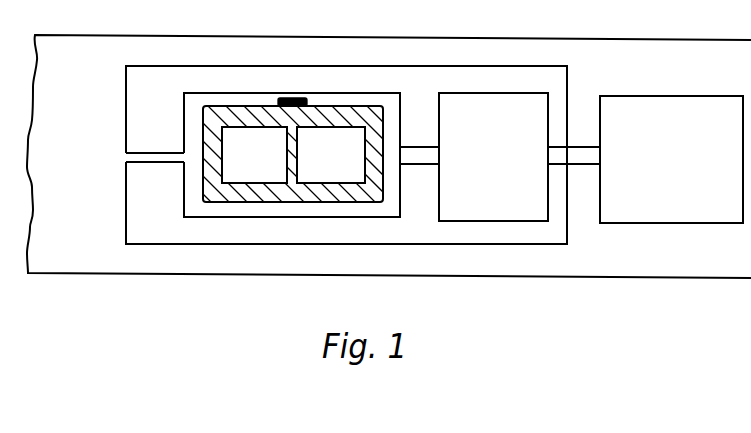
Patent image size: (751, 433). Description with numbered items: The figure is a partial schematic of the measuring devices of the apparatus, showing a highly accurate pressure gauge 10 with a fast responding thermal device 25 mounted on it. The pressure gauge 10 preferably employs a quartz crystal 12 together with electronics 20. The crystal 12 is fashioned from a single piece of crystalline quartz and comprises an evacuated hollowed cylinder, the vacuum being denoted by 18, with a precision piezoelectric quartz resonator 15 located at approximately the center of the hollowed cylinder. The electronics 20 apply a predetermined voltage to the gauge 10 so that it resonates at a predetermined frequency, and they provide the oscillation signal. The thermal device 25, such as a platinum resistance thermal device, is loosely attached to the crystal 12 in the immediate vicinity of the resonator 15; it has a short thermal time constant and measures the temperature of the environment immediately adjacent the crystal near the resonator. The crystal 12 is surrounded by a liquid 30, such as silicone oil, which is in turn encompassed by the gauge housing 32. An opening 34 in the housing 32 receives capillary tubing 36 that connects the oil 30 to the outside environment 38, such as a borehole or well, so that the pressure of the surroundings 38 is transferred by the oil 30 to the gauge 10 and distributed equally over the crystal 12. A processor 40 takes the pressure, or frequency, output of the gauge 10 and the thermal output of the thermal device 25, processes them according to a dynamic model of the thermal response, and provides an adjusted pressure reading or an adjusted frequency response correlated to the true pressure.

The pressure gauge 10 is at (413, 245).
The quartz crystal 12 is at (215, 117).
The quartz resonator 15 is at (304, 148).
The vacuum 18 is at (323, 172).
The electronics 20 is at (503, 76).
The thermal device 25 is at (296, 98).
The liquid 30 is at (381, 115).
The gauge housing 32 is at (149, 100).
The opening 34 is at (183, 163).
The capillary tubing 36 is at (152, 155).
The outside environment 38 is at (109, 74).
The processor 40 is at (689, 72).